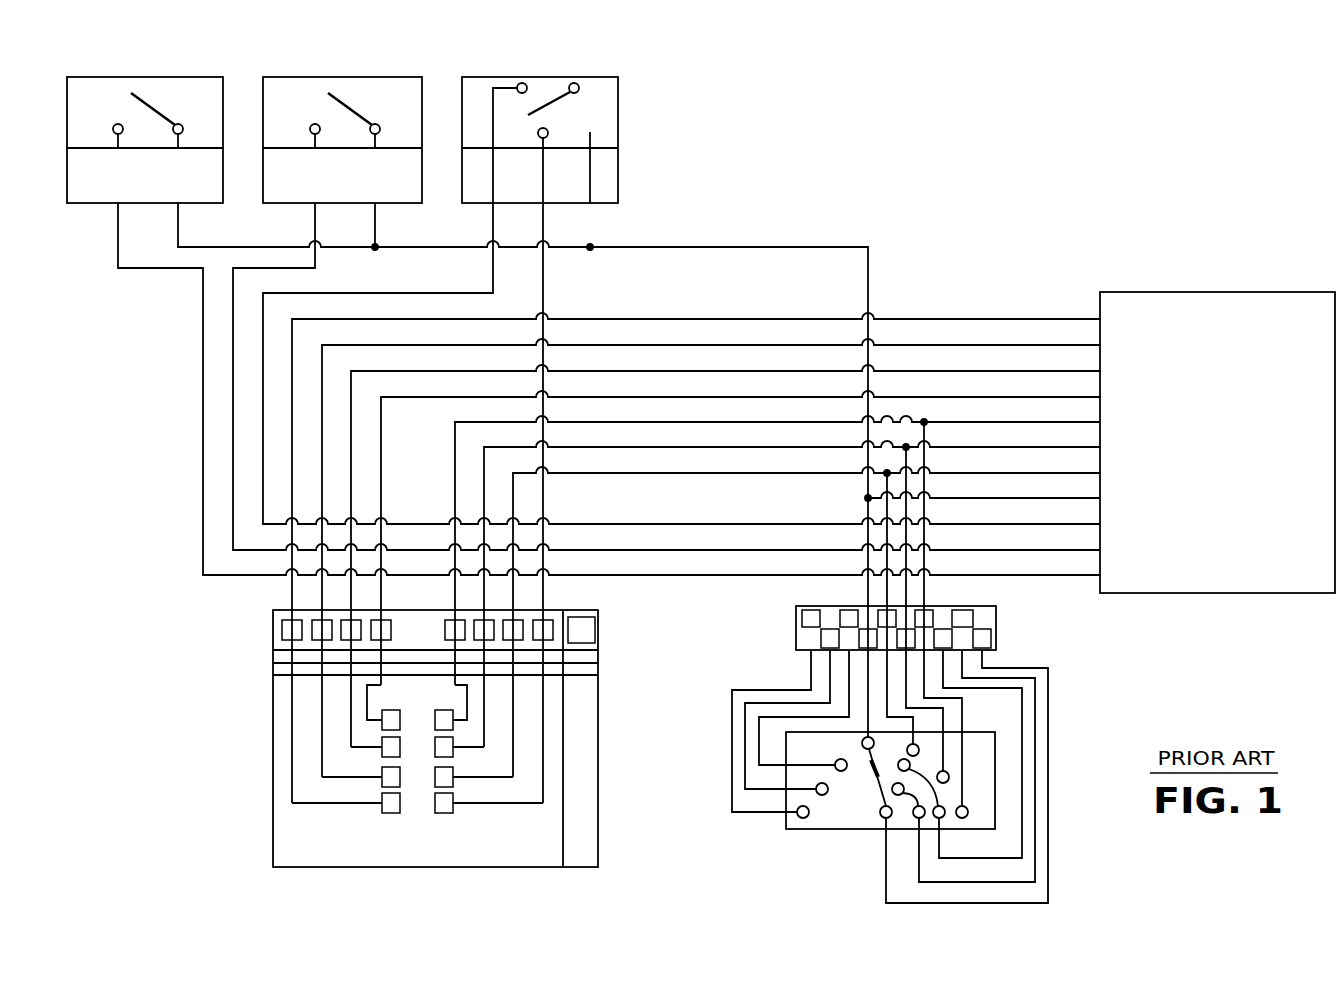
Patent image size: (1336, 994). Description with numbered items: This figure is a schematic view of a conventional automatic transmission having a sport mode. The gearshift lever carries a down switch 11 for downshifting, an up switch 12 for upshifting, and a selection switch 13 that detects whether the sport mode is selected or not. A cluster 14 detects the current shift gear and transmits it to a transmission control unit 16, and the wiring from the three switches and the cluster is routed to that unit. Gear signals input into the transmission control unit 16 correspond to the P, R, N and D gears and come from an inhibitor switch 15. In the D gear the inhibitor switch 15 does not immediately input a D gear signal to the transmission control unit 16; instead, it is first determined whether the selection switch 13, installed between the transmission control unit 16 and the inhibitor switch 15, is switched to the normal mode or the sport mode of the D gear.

The down switch 11 is at (223, 107).
The up switch 12 is at (422, 107).
The selection switch 13 is at (618, 107).
The cluster 14 is at (273, 807).
The inhibitor switch 15 is at (806, 829).
The transmission control unit (TCU) 16 is at (1228, 292).